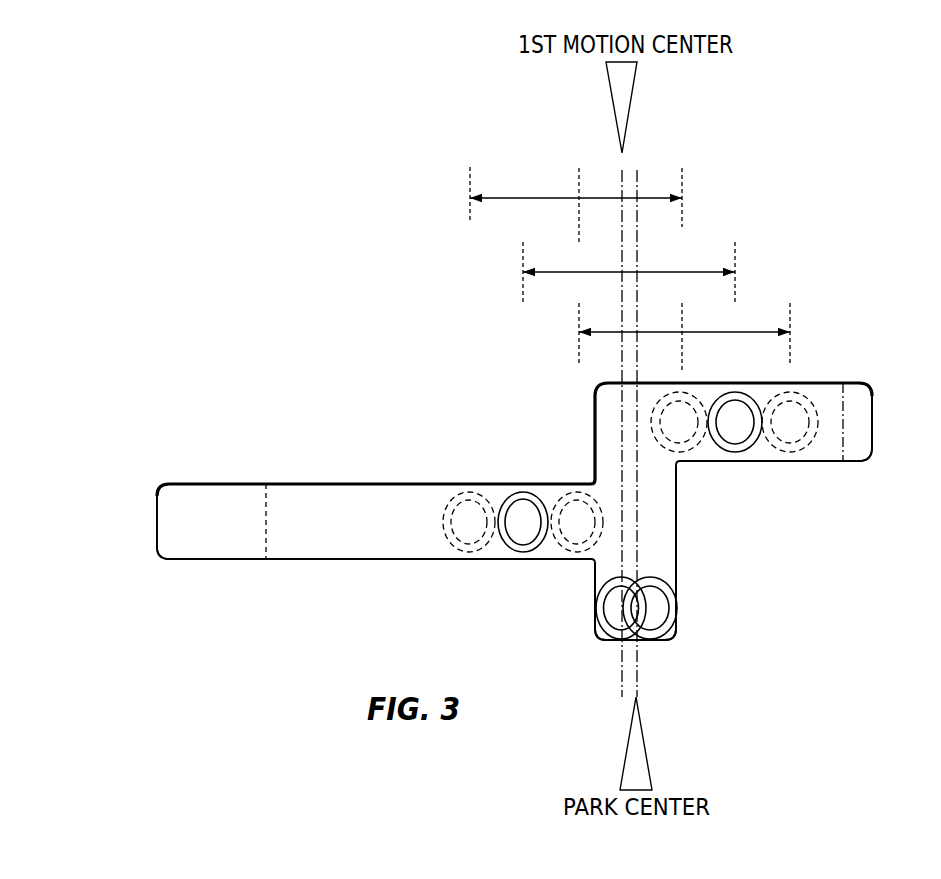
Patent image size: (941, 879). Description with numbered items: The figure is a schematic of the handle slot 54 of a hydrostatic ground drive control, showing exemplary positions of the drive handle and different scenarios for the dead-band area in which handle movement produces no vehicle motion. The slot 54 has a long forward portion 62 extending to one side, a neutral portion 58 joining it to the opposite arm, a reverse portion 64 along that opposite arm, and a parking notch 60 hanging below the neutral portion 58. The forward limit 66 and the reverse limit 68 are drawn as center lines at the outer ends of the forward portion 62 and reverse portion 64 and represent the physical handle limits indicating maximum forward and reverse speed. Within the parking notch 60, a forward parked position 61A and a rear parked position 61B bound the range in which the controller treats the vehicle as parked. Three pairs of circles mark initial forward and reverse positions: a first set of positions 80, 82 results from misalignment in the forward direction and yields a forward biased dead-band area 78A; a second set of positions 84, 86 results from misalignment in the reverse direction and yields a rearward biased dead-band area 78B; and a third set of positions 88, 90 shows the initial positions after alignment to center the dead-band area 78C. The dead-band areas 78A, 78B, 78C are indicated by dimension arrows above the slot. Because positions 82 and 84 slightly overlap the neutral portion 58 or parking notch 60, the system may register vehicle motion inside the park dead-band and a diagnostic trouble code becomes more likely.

The handle slot 54 is at (310, 342).
The neutral portion 58 is at (656, 527).
The parking notch 60 is at (594, 579).
The forward parked position 61A is at (600, 621).
The rear parked position 61B is at (675, 620).
The forward portion 62 is at (175, 566).
The reverse portion 64 is at (869, 441).
The forward limit 66 is at (267, 525).
The reverse limit 68 is at (843, 417).
The forward biased dead-band area 78A is at (647, 196).
The rearward biased dead-band area 78B is at (758, 328).
The centered dead-band area 78C is at (702, 268).
The initial forward position of first set 80 is at (470, 492).
The initial reverse position of first set 82 is at (698, 443).
The initial forward position of second set 84 is at (577, 492).
The initial reverse position of second set 86 is at (808, 443).
The initial forward position of third set 88 is at (523, 492).
The initial reverse position of third set 90 is at (750, 443).